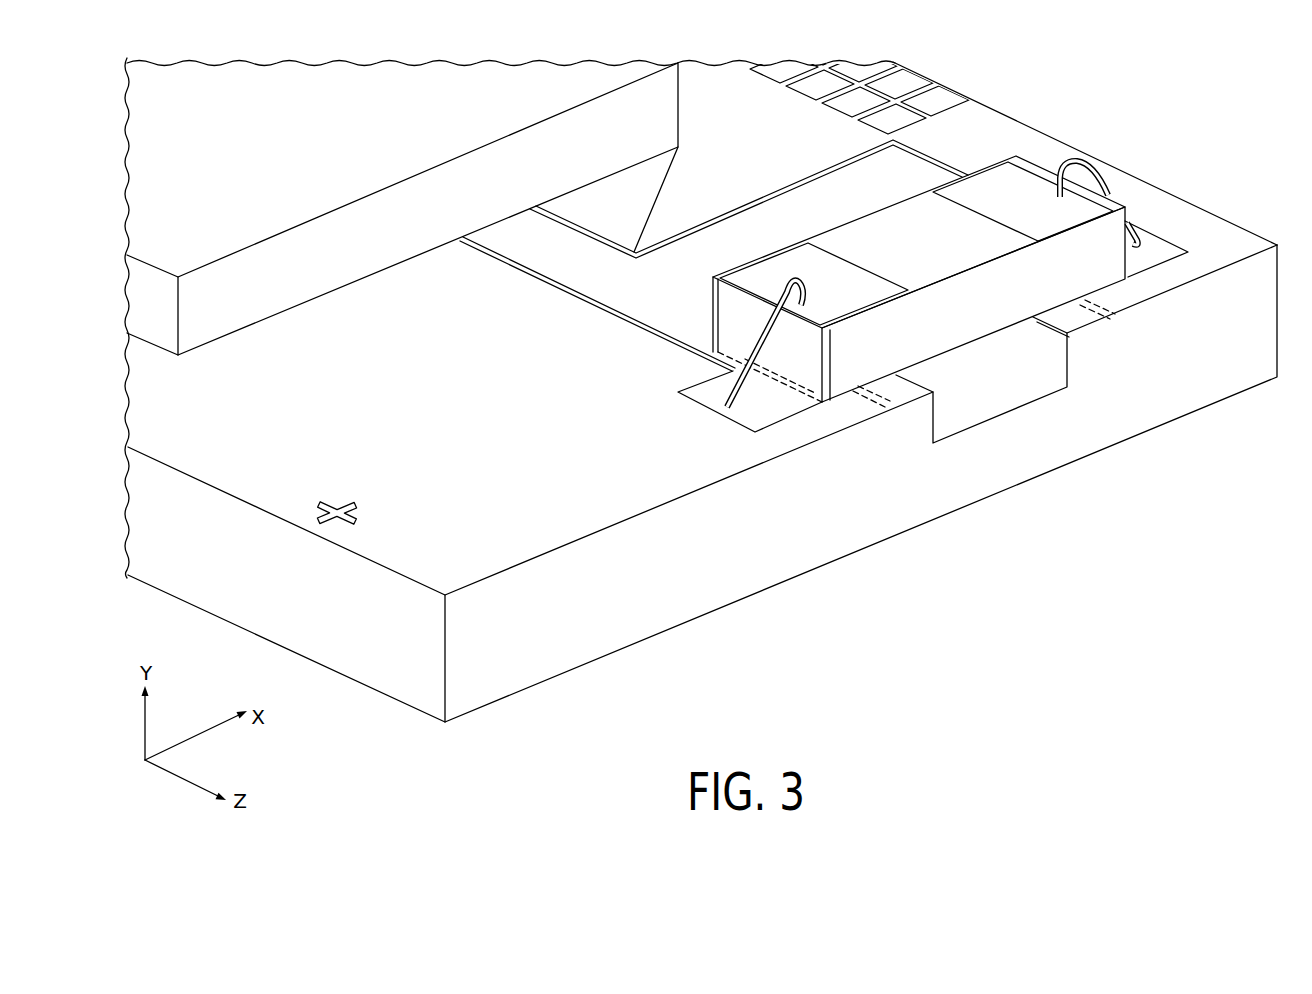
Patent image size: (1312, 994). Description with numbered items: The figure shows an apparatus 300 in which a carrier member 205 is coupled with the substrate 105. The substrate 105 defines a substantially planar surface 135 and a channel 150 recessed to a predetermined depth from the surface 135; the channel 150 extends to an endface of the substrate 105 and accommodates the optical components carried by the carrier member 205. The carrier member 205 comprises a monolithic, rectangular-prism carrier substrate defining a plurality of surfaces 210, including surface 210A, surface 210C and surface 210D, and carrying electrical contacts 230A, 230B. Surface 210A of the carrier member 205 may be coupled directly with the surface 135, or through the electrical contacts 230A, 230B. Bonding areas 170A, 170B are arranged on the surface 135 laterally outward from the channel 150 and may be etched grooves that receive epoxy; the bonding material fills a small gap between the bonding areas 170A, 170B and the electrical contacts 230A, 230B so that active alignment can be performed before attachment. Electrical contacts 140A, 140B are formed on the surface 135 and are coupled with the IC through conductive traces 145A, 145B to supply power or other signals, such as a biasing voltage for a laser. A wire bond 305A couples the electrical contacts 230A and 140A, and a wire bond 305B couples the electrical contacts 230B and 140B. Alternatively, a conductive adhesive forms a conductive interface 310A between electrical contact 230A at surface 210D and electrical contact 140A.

The apparatus 300 is at (1003, 648).
The substrate 105 is at (383, 692).
The surface 135 is at (334, 432).
The surfaces of carrier substrate 210 is at (258, 154).
The conductive trace 145A is at (548, 284).
The conductive trace 145B is at (802, 185).
The carrier member 205 is at (972, 168).
The surface of carrier member 210A is at (1006, 341).
The surface of carrier member 210C is at (878, 259).
The surface of carrier member 210D is at (712, 289).
The electrical contact 230A is at (813, 299).
The electrical contact 230B is at (1043, 211).
The electrical contact 140A is at (703, 398).
The electrical contact 140B is at (1150, 245).
The channel 150 is at (962, 417).
The bonding area 170A is at (876, 396).
The bonding area 170B is at (1090, 319).
The conductive interface 310A is at (797, 398).
The wire bond 305A is at (789, 280).
The wire bond 305B is at (1078, 160).